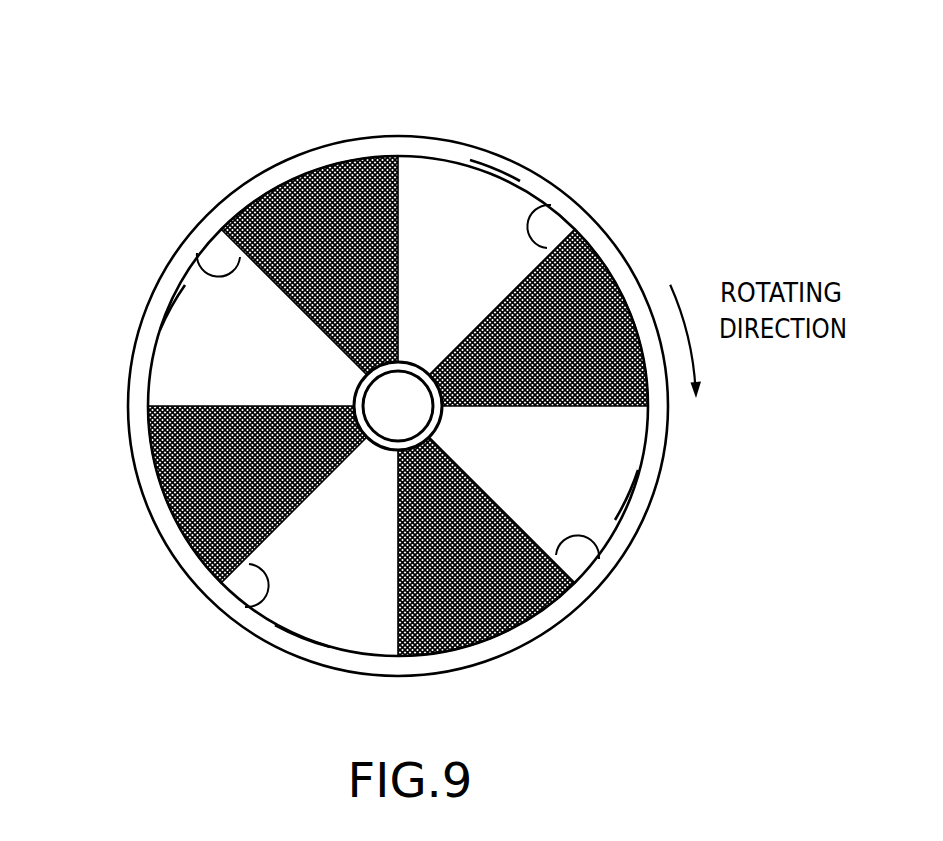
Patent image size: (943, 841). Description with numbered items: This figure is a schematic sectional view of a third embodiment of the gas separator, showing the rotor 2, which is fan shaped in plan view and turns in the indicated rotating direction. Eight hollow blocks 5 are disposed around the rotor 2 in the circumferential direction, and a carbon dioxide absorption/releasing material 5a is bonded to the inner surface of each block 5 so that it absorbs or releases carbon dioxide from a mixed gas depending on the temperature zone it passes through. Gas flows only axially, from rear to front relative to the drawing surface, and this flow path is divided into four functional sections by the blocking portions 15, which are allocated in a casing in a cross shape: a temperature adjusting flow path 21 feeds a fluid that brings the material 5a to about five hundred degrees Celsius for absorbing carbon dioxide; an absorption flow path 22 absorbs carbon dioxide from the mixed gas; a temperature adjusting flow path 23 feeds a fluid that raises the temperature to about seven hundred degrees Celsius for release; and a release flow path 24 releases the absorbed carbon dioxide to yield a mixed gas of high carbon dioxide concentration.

The rotor 2 is at (455, 160).
The hollow block 5 is at (419, 183).
The carbon dioxide absorption/releasing material 5a is at (197, 253).
The blocking portion 15 is at (288, 197).
The temperature adjusting flow path 21 is at (497, 203).
The absorption flow path 22 is at (600, 493).
The temperature adjusting flow path 23 is at (297, 592).
The release flow path 24 is at (182, 323).